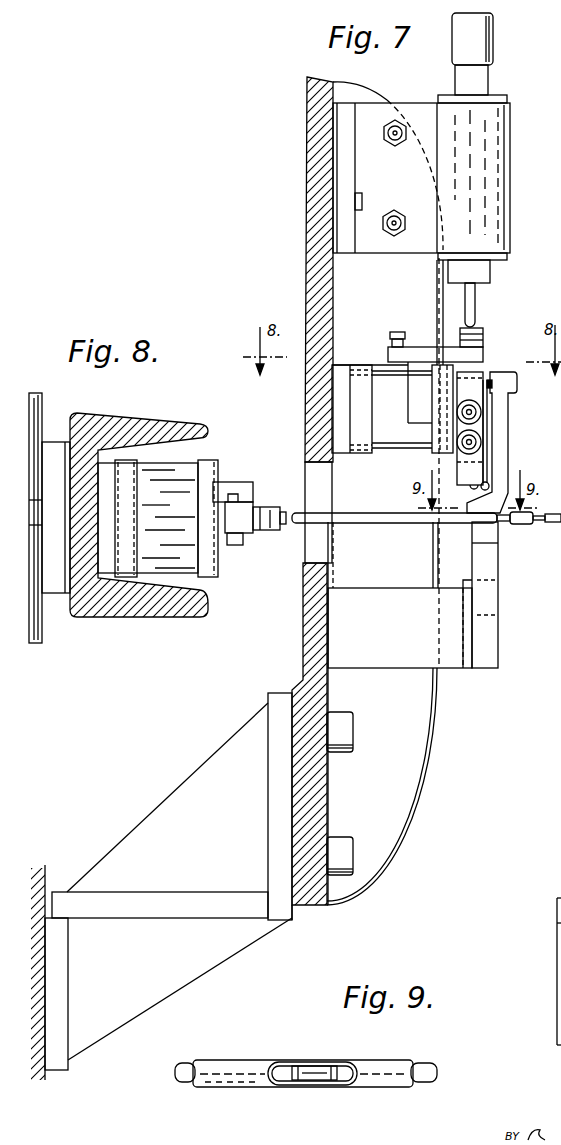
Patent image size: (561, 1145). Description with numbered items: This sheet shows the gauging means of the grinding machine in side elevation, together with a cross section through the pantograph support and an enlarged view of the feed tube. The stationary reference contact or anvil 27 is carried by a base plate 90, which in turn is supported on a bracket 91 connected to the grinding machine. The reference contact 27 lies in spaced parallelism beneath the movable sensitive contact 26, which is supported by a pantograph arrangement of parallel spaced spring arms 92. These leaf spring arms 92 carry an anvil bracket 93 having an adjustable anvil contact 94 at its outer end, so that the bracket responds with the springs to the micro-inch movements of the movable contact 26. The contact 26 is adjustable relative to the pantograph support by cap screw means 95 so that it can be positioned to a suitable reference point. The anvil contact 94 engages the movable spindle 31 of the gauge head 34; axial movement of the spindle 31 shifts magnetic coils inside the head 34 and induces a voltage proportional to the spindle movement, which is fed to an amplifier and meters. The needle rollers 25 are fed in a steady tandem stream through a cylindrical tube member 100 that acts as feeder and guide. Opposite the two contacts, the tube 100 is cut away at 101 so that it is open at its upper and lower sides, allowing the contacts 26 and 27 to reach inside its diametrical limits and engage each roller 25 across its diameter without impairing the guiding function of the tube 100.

In FIG. 9, the needle rollers 25 is at (320, 1081).
In FIG. 7, the movable sensitive contact 26 is at (500, 458).
In FIG. 7, the stationary reference contact 27 is at (495, 597).
In FIG. 7, the movable spindle 31 is at (480, 308).
In FIG. 7, the gauge head 34 is at (497, 200).
In FIG. 7, the base plate 90 is at (308, 632).
In FIG. 8, the base plate 90 is at (93, 617).
In FIG. 7, the bracket 91 is at (55, 998).
In FIG. 7, the spring arms 92 is at (396, 377).
In FIG. 8, the spring arms 92 is at (180, 470).
In FIG. 7, the anvil bracket 93 is at (420, 350).
In FIG. 7, the adjustable anvil contact 94 is at (485, 344).
In FIG. 7, the cap screw means 95 is at (479, 446).
In FIG. 8, the cap screw means 95 is at (236, 545).
In FIG. 7, the cylindrical tube member 100 is at (396, 522).
In FIG. 9, the cylindrical tube member 100 is at (247, 1043).
In FIG. 9, the cut away 101 is at (292, 1066).